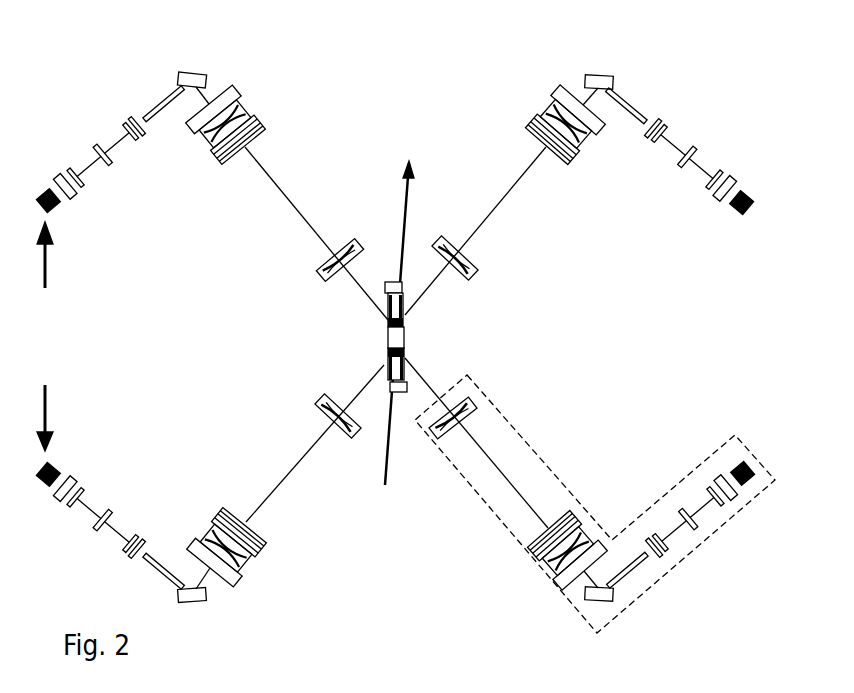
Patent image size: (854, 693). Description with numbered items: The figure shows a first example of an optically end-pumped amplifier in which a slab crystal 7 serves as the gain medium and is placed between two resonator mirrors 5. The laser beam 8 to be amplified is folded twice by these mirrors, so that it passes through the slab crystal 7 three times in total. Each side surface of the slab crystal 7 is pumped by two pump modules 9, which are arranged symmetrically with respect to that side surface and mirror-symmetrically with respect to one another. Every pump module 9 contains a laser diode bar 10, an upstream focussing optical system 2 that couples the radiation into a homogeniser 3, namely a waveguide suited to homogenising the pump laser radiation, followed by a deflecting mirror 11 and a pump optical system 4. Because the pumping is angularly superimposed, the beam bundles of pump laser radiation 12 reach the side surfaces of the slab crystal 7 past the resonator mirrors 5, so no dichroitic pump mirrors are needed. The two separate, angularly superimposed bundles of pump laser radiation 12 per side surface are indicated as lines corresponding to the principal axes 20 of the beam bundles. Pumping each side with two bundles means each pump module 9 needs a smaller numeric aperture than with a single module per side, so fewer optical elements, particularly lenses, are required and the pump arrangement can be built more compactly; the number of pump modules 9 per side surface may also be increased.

The focussing optical system 2 is at (702, 147).
The homogeniser 3 is at (627, 104).
The pump optical system 4 is at (552, 197).
The resonator mirrors 5 is at (391, 280).
The slab crystal 7 is at (389, 338).
The laser beam 8 is at (405, 197).
The pump module 9 is at (543, 463).
The laser diode bar 10 is at (740, 219).
The deflecting mirror 11 is at (589, 78).
The pump laser radiation 12 is at (494, 218).
The principal axes 20 is at (428, 291).